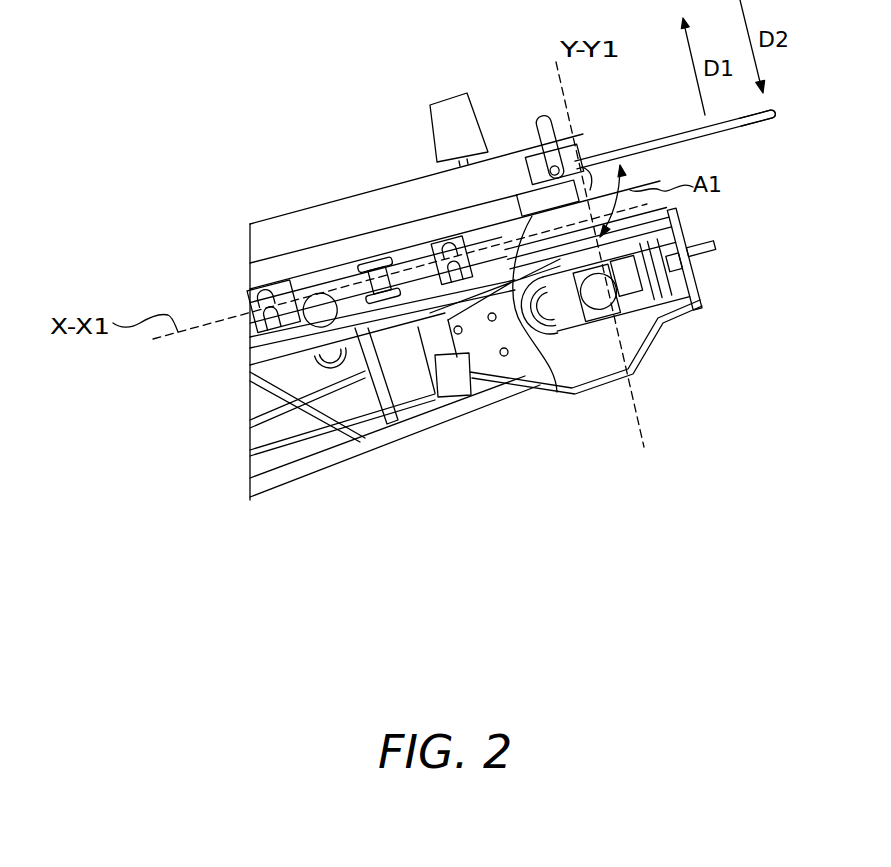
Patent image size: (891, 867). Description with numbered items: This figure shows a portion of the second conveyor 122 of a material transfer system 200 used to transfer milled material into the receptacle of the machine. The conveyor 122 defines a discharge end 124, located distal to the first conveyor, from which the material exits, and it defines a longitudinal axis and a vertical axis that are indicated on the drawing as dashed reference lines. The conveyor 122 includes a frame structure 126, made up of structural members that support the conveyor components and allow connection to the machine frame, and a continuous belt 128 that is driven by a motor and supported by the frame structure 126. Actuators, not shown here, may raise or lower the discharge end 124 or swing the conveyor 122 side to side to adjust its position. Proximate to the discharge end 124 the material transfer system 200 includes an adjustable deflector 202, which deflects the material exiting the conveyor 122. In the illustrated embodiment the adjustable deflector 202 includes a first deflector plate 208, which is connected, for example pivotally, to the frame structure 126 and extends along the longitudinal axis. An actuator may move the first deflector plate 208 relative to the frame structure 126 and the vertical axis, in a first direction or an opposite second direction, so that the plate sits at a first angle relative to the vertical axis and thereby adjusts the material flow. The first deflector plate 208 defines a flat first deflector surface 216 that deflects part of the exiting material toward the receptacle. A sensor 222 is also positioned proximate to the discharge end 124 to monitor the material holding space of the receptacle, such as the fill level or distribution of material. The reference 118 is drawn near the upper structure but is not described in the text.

The conveyor frame 118 is at (389, 150).
The second conveyor 122 is at (512, 132).
The discharge end 124 is at (679, 338).
The frame structure 126 is at (305, 262).
The continuous belt 128 is at (352, 273).
The material transfer system 200 is at (803, 144).
The adjustable deflector 202 is at (641, 133).
The first deflector plate 208 is at (588, 180).
The first deflector surface 216 is at (743, 139).
The sensor 222 is at (557, 395).